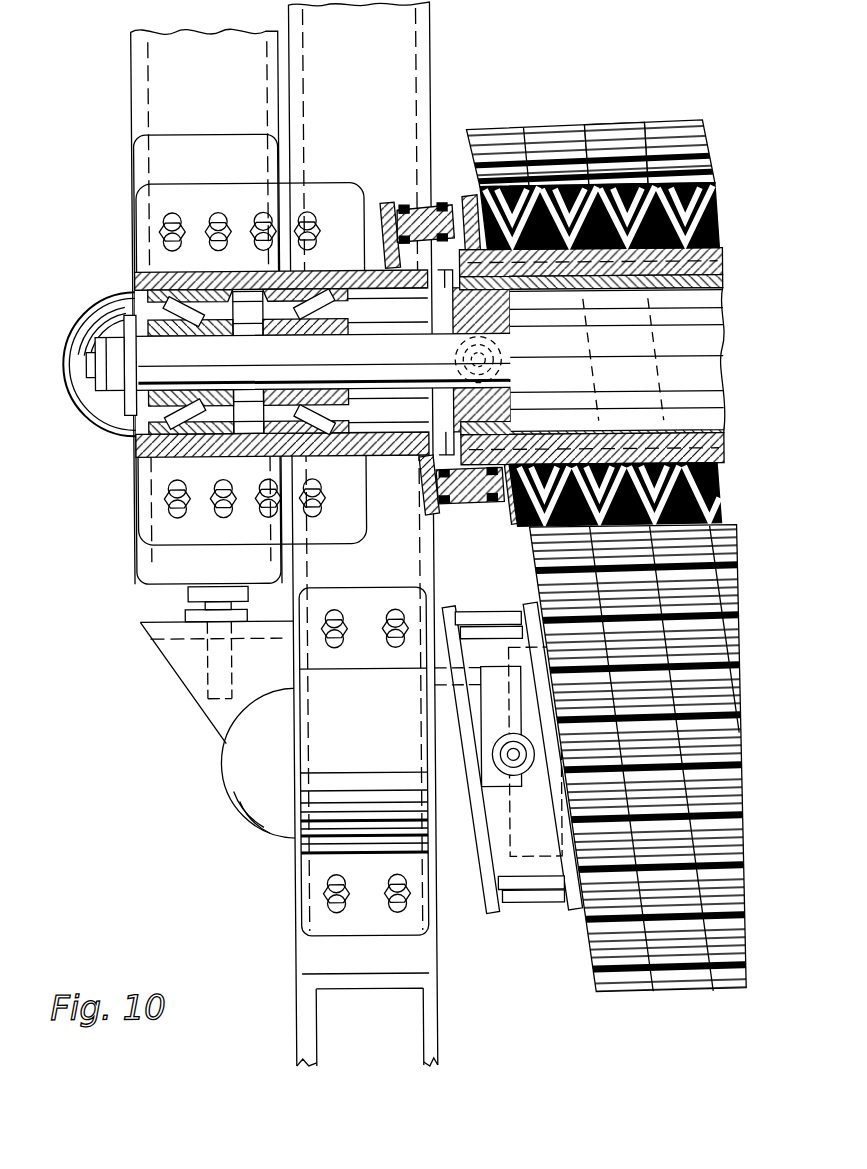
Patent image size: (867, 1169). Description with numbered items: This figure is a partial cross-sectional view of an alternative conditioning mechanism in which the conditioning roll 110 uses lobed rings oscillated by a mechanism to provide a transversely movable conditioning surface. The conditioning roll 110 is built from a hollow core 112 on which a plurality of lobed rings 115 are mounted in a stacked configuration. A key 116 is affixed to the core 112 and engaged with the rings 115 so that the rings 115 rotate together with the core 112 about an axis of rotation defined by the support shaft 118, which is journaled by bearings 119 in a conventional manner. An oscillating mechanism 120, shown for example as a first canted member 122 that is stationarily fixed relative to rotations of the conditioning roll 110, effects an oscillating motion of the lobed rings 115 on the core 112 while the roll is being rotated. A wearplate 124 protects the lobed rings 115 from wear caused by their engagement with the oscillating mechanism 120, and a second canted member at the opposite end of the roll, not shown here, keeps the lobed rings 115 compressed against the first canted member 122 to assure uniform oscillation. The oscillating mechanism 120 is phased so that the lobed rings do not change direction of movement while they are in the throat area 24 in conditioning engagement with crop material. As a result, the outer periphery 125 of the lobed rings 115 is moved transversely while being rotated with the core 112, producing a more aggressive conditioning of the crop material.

The conditioning roll 110 is at (620, 541).
The hollow core 112 is at (607, 418).
The lobed rings 115 is at (512, 90).
The key 116 is at (770, 236).
The support shaft 118 is at (329, 361).
The bearings 119 is at (140, 455).
The oscillating mechanism 120 is at (368, 152).
The first canted member 122 is at (433, 518).
The wearplate 124 is at (520, 508).
The outer periphery 125 is at (610, 122).
The throat area 24 is at (734, 512).